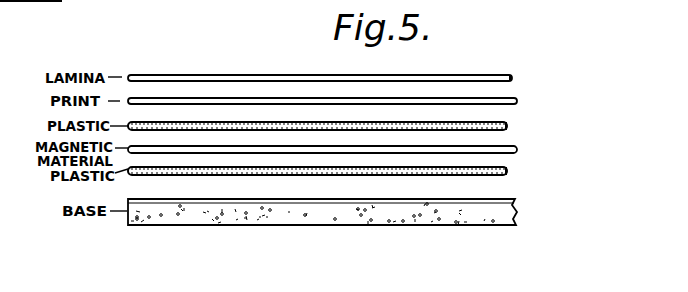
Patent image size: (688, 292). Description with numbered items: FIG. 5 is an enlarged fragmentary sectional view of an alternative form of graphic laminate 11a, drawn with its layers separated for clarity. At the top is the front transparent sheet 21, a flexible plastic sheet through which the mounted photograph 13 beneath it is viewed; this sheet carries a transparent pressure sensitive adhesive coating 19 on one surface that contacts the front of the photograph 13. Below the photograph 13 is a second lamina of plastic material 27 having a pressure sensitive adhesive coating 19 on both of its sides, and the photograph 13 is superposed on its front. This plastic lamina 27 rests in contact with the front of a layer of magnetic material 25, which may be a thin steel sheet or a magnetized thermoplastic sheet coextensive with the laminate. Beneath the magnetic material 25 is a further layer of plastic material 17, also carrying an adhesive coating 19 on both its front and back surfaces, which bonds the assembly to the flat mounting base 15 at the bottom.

The graphic laminate 11a is at (483, 71).
The front transparent sheet 21 is at (227, 75).
The photograph 13 is at (285, 99).
The second lamina of plastic material 27 is at (147, 128).
The layer of magnetic material 25 is at (265, 153).
The layer of plastic material 17 is at (183, 168).
The flat mounting base 15 is at (342, 210).
The pressure sensitive adhesive coating 19 is at (512, 79).